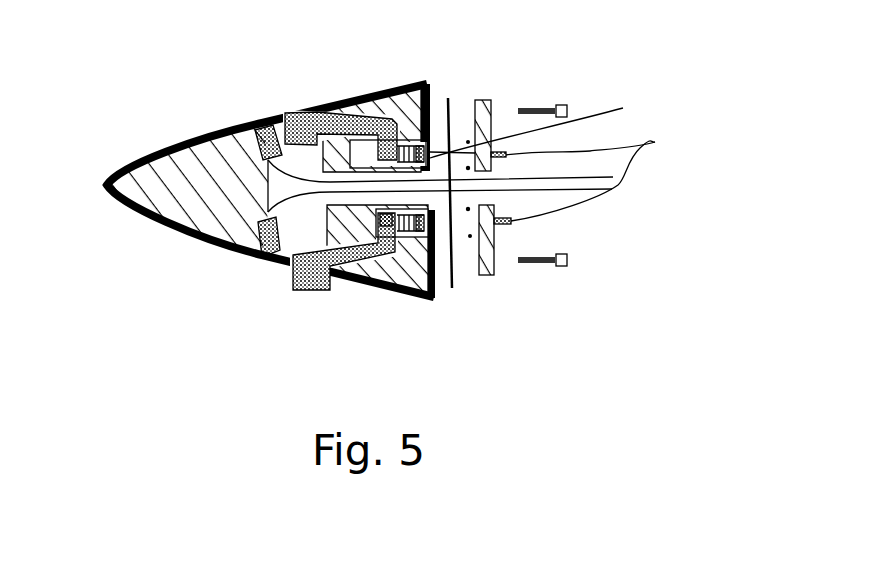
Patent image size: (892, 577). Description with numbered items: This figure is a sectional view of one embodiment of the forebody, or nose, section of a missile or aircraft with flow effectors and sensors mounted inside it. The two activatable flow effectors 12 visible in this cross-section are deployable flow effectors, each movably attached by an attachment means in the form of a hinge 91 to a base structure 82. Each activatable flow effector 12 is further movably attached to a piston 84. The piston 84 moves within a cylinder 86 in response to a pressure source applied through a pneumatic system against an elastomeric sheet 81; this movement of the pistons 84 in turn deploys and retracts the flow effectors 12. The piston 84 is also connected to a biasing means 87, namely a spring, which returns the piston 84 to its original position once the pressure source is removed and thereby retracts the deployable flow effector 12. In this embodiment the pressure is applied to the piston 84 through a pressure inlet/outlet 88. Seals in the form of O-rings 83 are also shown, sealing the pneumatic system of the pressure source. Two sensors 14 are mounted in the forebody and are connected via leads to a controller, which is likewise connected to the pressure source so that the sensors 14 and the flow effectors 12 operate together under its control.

The activatable flow effector 12 is at (296, 113).
The sensor 14 is at (260, 127).
The hinge 91 is at (386, 117).
The base structure 82 is at (418, 88).
The elastomeric sheet 81 is at (450, 98).
The piston 84 is at (491, 100).
The O-rings 83 is at (468, 168).
The cylinder 86 is at (413, 160).
The biasing means 87 is at (540, 125).
The pressure inlet/outlet 88 is at (595, 175).